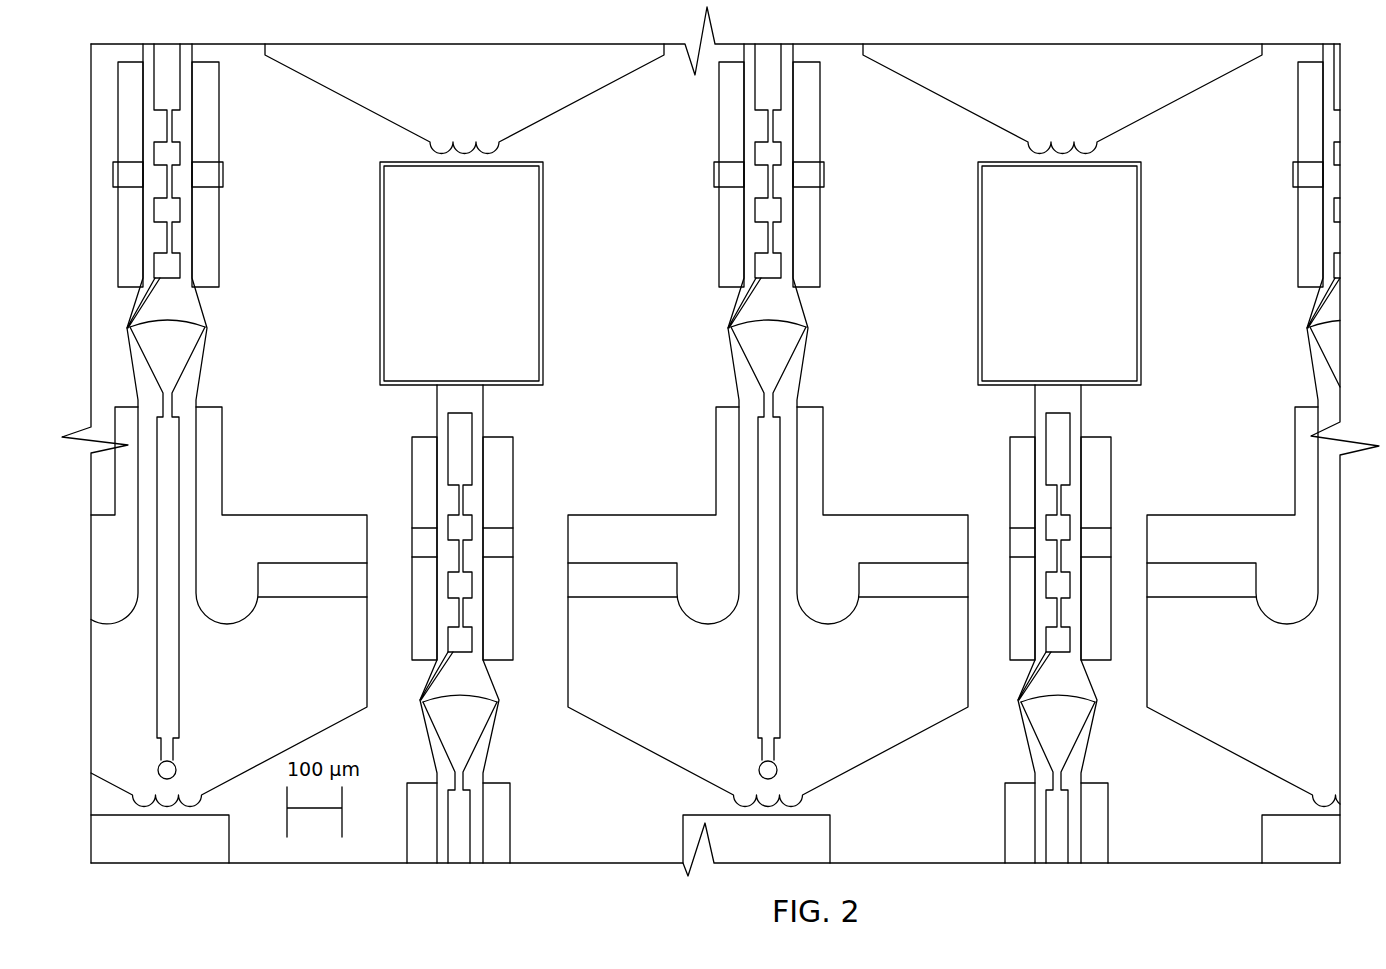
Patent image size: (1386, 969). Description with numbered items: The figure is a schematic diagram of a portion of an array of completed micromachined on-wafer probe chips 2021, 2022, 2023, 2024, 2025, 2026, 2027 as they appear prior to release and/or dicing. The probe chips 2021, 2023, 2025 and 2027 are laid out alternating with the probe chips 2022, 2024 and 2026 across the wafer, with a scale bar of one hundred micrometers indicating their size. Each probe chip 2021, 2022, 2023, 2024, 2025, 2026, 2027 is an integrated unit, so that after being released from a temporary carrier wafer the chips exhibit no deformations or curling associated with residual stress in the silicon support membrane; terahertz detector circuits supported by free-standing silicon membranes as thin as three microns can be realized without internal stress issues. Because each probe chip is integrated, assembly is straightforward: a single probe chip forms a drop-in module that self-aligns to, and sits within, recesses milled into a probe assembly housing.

The probe chip 2021 is at (333, 727).
The probe chip 2022 is at (513, 482).
The probe chip 2023 is at (565, 90).
The probe chip 2024 is at (895, 748).
The probe chip 2025 is at (1183, 97).
The probe chip 2026 is at (1005, 818).
The probe chip 2027 is at (1217, 745).